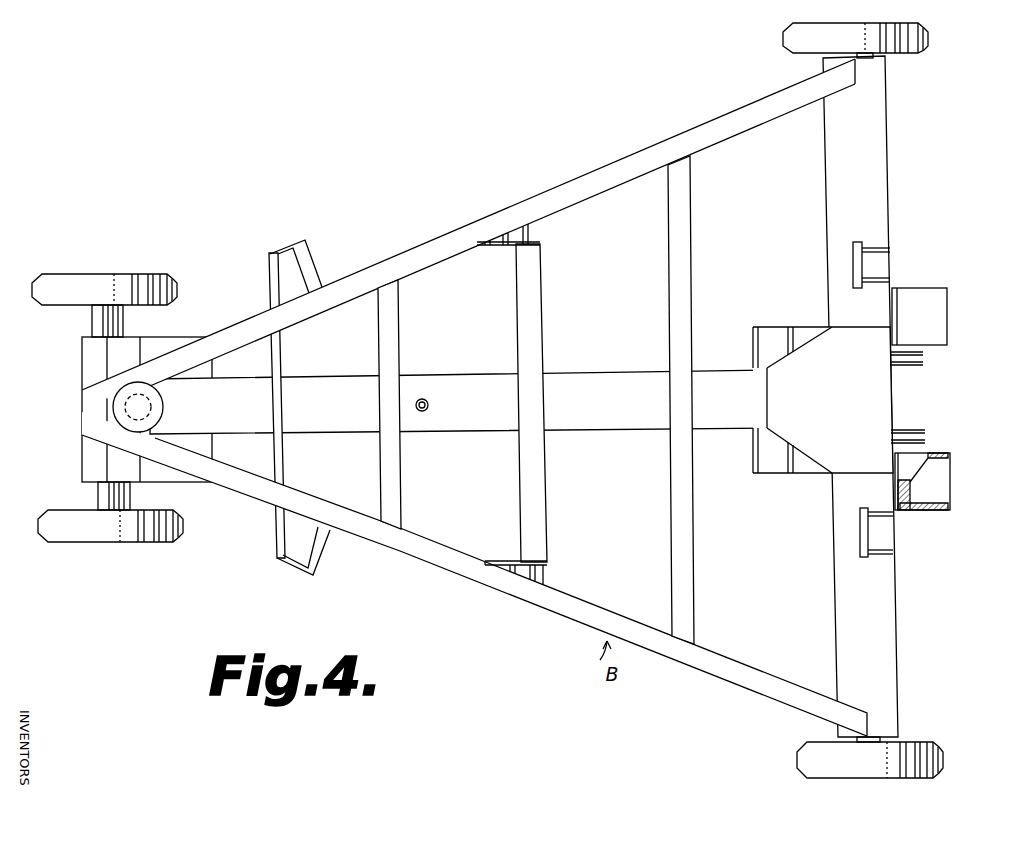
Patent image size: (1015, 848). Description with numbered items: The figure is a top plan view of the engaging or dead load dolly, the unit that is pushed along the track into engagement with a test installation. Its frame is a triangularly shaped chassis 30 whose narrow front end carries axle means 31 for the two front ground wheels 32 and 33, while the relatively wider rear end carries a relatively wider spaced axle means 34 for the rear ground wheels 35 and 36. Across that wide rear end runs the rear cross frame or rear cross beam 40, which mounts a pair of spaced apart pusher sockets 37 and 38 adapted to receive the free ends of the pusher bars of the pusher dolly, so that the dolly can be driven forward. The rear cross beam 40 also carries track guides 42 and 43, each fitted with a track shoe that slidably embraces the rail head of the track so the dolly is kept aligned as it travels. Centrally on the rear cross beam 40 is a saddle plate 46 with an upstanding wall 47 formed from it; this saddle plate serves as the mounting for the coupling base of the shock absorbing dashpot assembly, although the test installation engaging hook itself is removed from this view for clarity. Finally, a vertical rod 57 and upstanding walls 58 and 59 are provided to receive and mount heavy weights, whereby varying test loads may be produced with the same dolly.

The chassis 30 is at (700, 643).
The axle means 31 is at (124, 326).
The ground wheel 32 is at (160, 533).
The ground wheel 33 is at (138, 279).
The axle means 34 is at (862, 58).
The ground wheel 35 is at (940, 755).
The ground wheel 36 is at (928, 48).
The pusher socket 37 is at (943, 493).
The pusher socket 38 is at (937, 325).
The rear cross frame 40 is at (880, 618).
The track guide 42 is at (178, 475).
The track guide 43 is at (785, 463).
The saddle plate 46 is at (880, 393).
The upstanding wall 47 is at (752, 341).
The vertical rod 57 is at (425, 412).
The upstanding wall 58 is at (279, 371).
The upstanding wall 59 is at (492, 562).